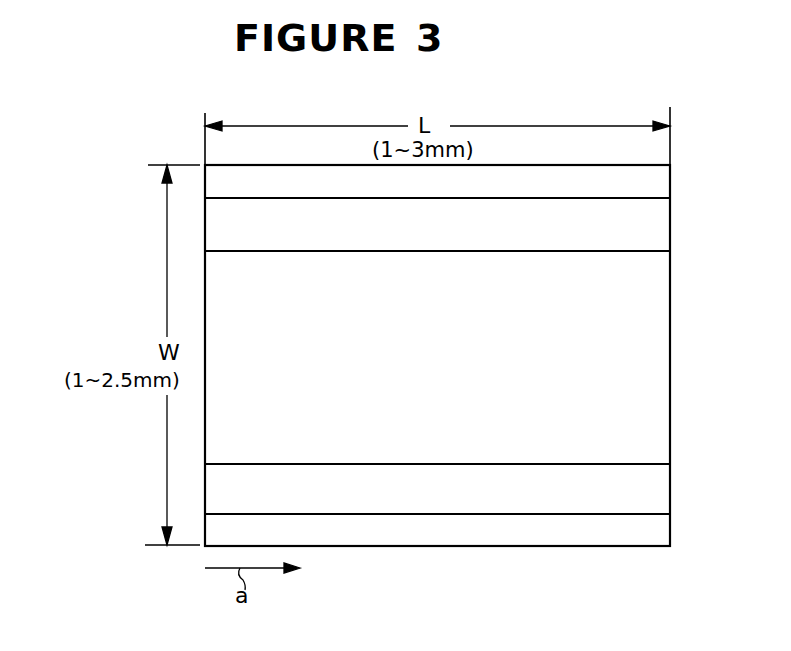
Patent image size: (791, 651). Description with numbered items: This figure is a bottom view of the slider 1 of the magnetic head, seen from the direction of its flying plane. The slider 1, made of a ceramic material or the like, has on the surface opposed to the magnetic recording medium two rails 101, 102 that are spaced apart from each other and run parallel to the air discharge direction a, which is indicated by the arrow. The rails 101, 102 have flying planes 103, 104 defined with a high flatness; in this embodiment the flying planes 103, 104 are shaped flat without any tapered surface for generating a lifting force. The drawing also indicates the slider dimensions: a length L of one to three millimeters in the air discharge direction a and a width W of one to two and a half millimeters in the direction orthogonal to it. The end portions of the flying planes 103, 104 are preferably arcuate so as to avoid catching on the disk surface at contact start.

The slider 1 is at (650, 355).
The rail 101 is at (638, 464).
The rail 102 is at (618, 252).
The flying plane 103 is at (616, 489).
The flying plane 104 is at (625, 207).